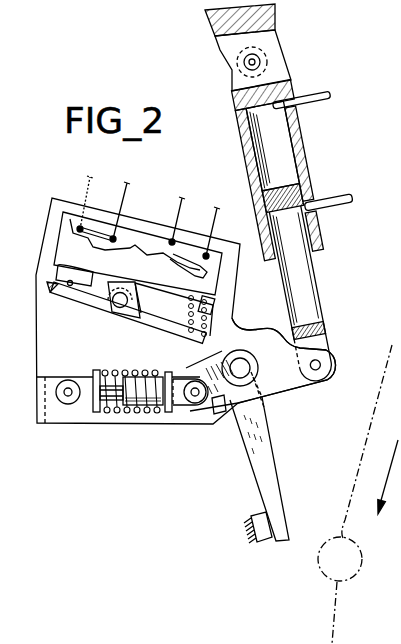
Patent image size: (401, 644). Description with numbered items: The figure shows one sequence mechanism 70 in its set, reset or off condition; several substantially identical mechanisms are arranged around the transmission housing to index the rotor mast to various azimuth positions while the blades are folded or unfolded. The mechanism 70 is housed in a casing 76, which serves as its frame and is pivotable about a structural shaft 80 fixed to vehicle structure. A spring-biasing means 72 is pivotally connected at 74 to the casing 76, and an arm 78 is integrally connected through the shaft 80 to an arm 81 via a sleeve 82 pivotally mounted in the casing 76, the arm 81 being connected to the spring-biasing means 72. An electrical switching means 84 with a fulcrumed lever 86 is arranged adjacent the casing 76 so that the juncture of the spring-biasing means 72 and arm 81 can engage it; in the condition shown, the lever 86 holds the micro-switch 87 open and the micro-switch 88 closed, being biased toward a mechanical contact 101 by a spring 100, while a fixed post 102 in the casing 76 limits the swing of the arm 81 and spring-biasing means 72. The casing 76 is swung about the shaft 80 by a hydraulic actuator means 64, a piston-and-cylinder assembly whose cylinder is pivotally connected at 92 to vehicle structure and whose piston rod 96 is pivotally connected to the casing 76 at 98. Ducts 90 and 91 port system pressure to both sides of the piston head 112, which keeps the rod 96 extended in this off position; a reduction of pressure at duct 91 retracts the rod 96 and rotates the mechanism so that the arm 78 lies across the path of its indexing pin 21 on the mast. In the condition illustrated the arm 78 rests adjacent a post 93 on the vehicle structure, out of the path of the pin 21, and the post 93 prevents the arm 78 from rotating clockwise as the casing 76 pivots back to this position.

The indexing pin 21 is at (320, 552).
The hydraulic actuator means 64 is at (318, 152).
The sequence mechanism 70 is at (84, 442).
The spring-biasing means 72 is at (130, 363).
The pivot connection 74 is at (66, 395).
The casing 76 is at (133, 420).
The arm 78 is at (270, 447).
The structural shaft 80 is at (245, 367).
The arm 81 is at (206, 362).
The sleeve 82 is at (250, 346).
The electrical switching means 84 is at (57, 243).
The fulcrumed lever 86 is at (160, 320).
The micro-switch 87 is at (178, 266).
The micro-switch 88 is at (97, 247).
The duct 90 is at (338, 196).
The duct 91 is at (306, 97).
The pivotal connection 92 is at (262, 60).
The post 93 is at (255, 520).
The piston rod 96 is at (305, 308).
The pivotal connection 98 is at (325, 366).
The spring 100 is at (211, 313).
The mechanical contact 101 is at (52, 285).
The fixed post 102 is at (212, 421).
The piston head 112 is at (262, 197).